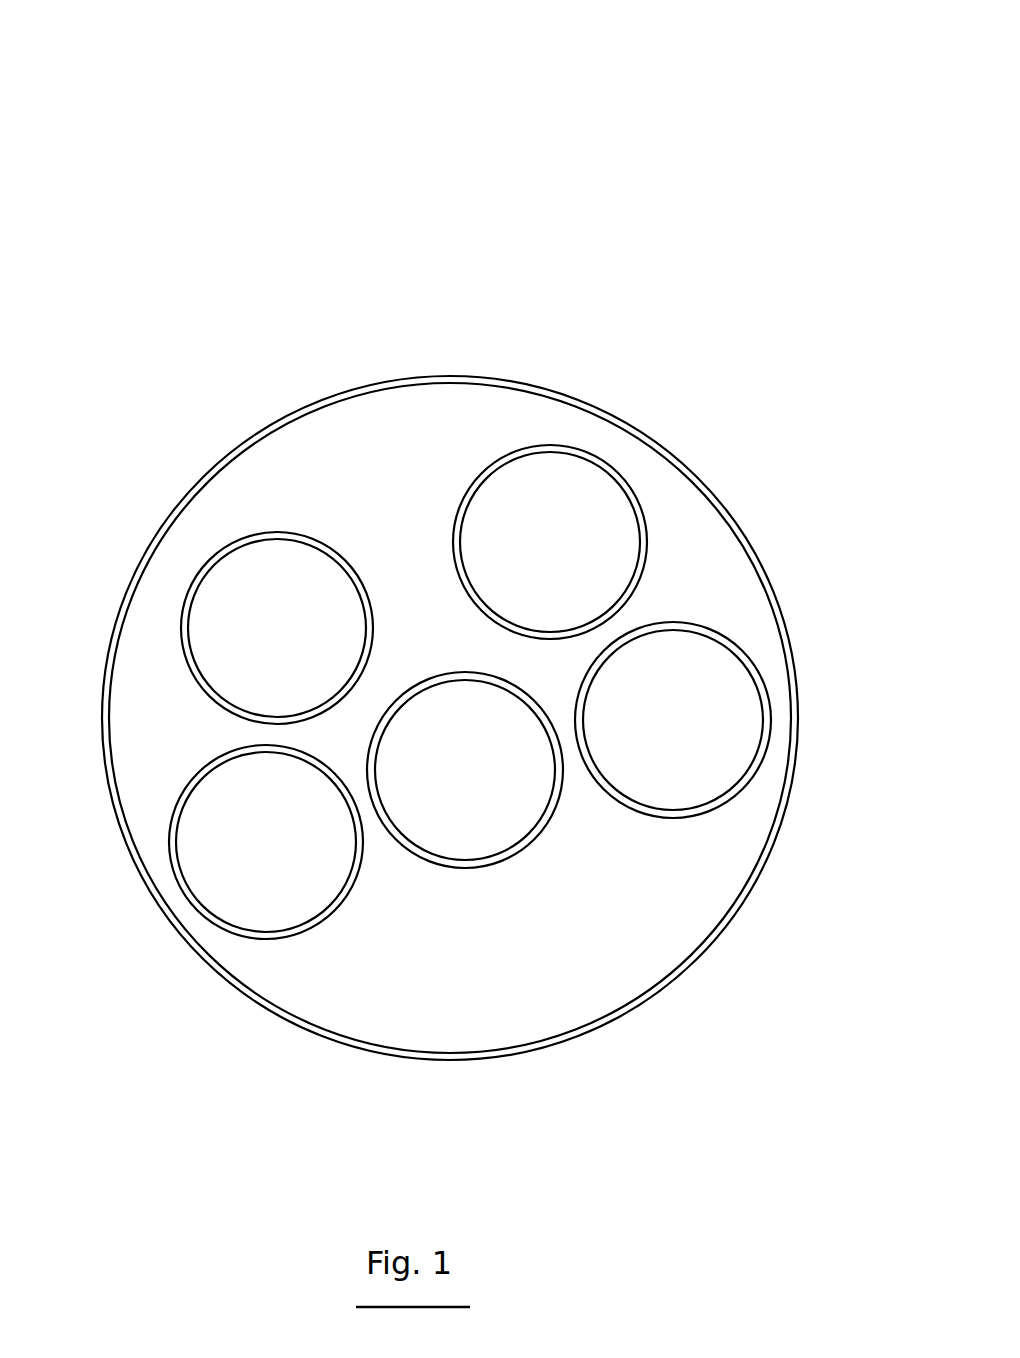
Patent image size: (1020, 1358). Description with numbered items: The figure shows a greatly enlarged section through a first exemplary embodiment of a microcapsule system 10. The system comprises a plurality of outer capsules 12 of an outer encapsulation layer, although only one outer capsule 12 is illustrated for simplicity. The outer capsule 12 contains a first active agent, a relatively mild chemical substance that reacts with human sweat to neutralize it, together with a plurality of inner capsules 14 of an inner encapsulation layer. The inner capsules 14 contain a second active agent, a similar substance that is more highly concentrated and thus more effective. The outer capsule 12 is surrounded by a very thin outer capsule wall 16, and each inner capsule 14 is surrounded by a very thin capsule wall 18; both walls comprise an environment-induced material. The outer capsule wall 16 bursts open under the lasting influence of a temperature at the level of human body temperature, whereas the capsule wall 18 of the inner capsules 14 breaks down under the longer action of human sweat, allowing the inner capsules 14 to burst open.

The microcapsule system 10 is at (579, 140).
The outer capsule 12 is at (366, 418).
The inner capsule 14 is at (606, 506).
The outer capsule wall 16 is at (488, 378).
The capsule wall of the inner capsules 18 is at (590, 458).